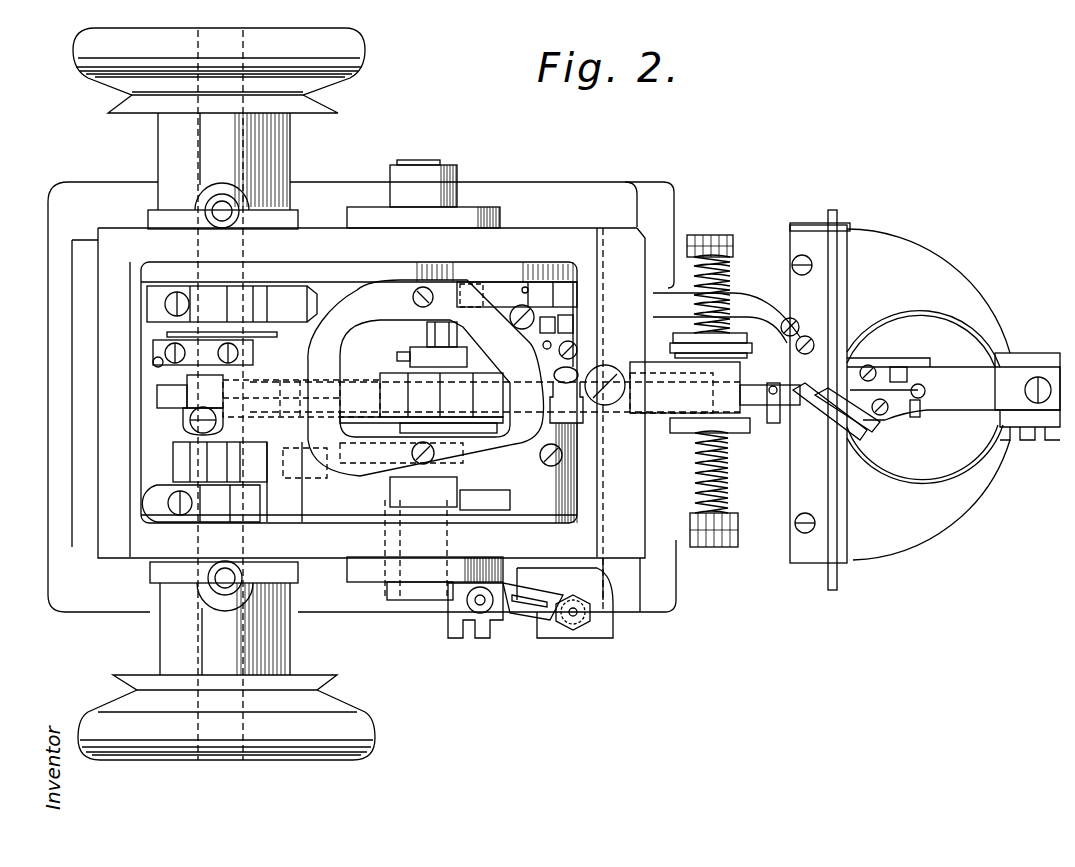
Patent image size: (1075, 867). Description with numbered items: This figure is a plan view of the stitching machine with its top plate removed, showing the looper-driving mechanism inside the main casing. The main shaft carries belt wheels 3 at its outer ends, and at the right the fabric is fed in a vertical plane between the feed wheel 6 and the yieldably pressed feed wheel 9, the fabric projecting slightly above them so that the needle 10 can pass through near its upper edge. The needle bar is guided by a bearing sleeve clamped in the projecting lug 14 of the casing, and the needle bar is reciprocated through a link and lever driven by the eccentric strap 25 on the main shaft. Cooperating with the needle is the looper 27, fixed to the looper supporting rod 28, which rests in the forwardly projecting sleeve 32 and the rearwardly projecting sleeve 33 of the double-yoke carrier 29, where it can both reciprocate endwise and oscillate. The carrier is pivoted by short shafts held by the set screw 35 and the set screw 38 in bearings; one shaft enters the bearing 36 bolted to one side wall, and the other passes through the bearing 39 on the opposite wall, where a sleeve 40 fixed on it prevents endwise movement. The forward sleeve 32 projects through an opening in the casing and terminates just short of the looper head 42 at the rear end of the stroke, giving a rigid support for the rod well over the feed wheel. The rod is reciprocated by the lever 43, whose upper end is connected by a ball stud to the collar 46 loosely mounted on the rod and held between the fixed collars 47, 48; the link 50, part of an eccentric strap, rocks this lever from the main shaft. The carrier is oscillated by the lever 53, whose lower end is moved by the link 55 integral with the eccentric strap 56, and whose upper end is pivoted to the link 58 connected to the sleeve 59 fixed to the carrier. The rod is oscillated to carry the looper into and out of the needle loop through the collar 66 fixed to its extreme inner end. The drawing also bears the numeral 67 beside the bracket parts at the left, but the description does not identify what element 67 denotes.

The belt wheels 3 is at (350, 62).
The feed wheel 6 is at (750, 473).
The feed wheel 9 is at (933, 477).
The needle 10 is at (807, 333).
The projecting lug 14 is at (307, 478).
The eccentric strap 25 is at (175, 462).
The looper 27 is at (857, 473).
The looper supporting rod 28 is at (757, 402).
The carrier 29 is at (502, 443).
The sleeve 32 is at (615, 418).
The sleeve 33 is at (183, 412).
The set screw 35 is at (435, 457).
The bearing 36 is at (422, 572).
The set screw 38 is at (385, 287).
The bearing 39 is at (372, 216).
The sleeve 40 is at (411, 178).
The looper head 42 is at (790, 393).
The lever 43 is at (398, 357).
The collar 46 is at (452, 358).
The fixed collar 47 is at (262, 396).
The fixed collar 48 is at (485, 392).
The link 50 is at (317, 403).
The lever 53 is at (560, 315).
The link 55 is at (500, 285).
The eccentric strap 56 is at (148, 300).
The link 58 is at (565, 348).
The sleeve 59 is at (575, 418).
The collar 66 is at (195, 378).
The bracket 67 is at (155, 350).